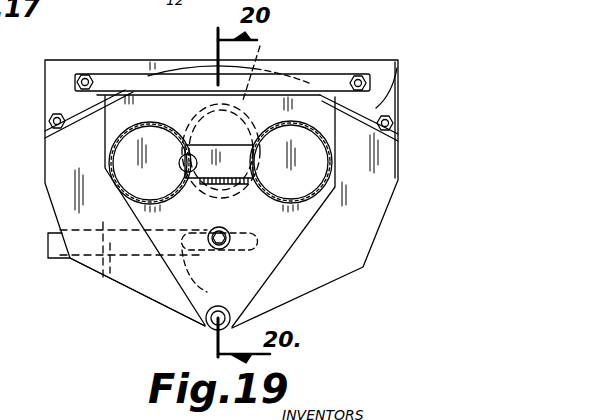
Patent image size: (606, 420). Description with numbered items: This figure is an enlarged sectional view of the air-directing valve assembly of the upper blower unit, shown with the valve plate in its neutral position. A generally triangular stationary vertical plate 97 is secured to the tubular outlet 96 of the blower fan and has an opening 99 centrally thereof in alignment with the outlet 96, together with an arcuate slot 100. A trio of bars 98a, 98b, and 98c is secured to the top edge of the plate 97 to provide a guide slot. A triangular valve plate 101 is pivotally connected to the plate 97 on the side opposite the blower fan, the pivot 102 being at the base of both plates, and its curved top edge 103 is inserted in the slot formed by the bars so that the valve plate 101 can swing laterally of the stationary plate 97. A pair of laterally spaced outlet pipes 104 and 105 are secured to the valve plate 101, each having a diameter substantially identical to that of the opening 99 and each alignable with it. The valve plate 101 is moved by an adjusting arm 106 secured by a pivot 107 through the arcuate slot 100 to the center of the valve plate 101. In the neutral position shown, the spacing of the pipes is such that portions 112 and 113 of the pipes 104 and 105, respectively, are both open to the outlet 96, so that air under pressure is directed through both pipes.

The tubular outlet 96 is at (188, 115).
The vertical plate 97 is at (145, 280).
The bar 98a is at (72, 110).
The bar 98b is at (287, 83).
The bar 98c is at (398, 60).
The opening 99 is at (257, 41).
The arcuate slot 100 is at (202, 287).
The valve plate 101 is at (262, 265).
The pivot 102 is at (203, 328).
The curved top edge 103 is at (210, 68).
The outlet pipe 104 is at (308, 132).
The outlet pipe 105 is at (143, 122).
The adjusting arm 106 is at (60, 258).
The pivot 107 is at (232, 232).
The portion of outlet pipe 112 is at (256, 197).
The portion of outlet pipe 113 is at (191, 182).